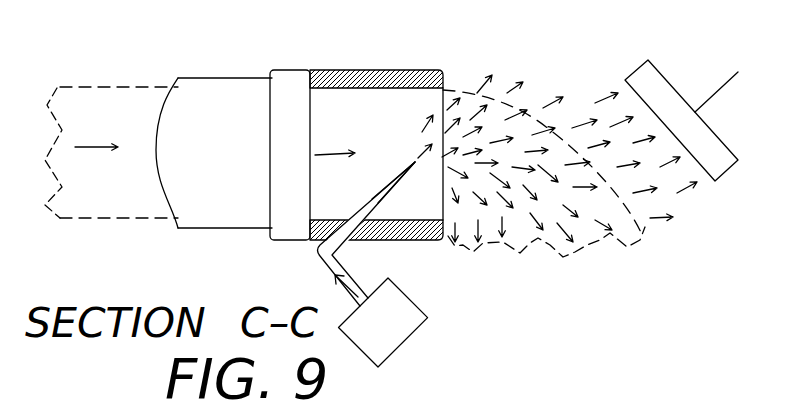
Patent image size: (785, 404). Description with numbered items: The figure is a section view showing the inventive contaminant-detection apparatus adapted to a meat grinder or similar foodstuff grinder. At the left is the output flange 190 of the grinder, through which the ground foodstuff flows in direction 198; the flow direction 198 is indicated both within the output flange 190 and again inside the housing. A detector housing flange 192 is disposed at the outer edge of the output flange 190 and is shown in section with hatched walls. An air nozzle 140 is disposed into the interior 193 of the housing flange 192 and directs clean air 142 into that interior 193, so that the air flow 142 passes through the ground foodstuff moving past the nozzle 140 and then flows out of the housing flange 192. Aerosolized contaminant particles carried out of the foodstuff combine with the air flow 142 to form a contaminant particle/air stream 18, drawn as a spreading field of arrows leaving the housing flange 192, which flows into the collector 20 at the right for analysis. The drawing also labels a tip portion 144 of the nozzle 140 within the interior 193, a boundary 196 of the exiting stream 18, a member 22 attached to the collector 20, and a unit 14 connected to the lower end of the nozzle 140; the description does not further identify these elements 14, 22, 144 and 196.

The detector 14 is at (413, 332).
The contaminant particle/air stream 18 is at (588, 87).
The collector 20 is at (645, 62).
The mirror support 22 is at (707, 97).
The air nozzle 140 is at (317, 249).
The clean air flow 142 is at (364, 290).
The fiber tip 144 is at (418, 152).
The output flange 190 is at (207, 78).
The detector housing flange 192 is at (333, 70).
The interior 193 is at (407, 115).
The beam envelope 196 is at (468, 92).
The direction 198 is at (316, 157).